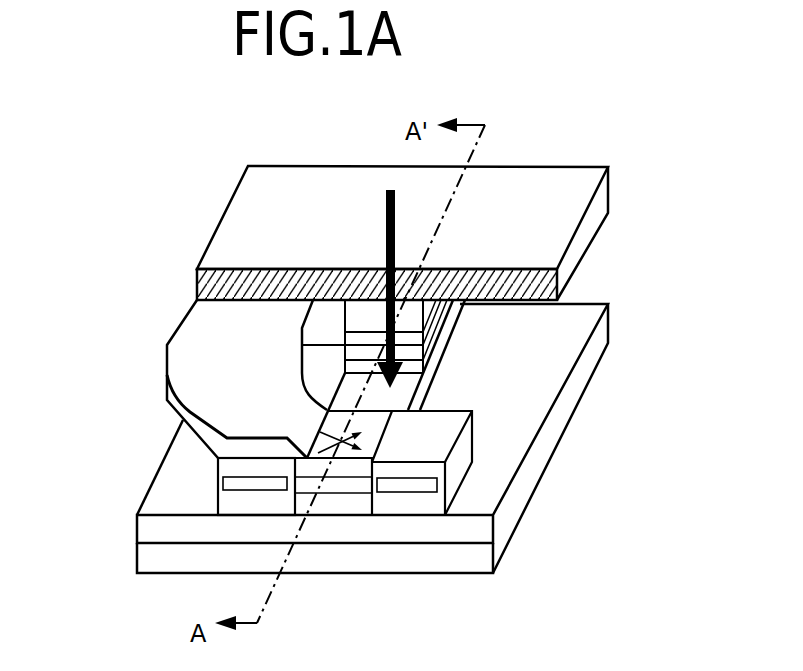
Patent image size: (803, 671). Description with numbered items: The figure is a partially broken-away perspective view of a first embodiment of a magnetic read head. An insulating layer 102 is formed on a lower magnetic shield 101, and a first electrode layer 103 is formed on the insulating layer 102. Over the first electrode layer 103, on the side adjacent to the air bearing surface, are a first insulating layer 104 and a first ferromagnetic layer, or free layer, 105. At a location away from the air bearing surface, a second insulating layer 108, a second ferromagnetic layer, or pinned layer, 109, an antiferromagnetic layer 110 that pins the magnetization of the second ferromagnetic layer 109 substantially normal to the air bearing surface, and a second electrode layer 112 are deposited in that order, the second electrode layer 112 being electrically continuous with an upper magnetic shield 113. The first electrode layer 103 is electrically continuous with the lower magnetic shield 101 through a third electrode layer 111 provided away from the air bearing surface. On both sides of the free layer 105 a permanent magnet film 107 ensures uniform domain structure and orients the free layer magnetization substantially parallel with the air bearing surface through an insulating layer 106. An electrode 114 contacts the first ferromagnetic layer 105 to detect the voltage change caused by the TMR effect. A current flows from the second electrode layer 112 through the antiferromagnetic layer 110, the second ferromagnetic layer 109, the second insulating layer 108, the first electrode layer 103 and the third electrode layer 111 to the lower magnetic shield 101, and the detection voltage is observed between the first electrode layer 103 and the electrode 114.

The lower magnetic shield 101 is at (402, 558).
The insulating layer 102 is at (435, 535).
The first electrode layer 103 is at (338, 505).
The first insulating layer 104 is at (312, 474).
The first ferromagnetic layer (free layer) 105 is at (337, 428).
The insulating layer 106 is at (458, 465).
The permanent magnet film 107 is at (240, 480).
The second insulating layer 108 is at (408, 367).
The second ferromagnetic layer (pinned layer) 109 is at (408, 352).
The antiferromagnetic layer 110 is at (408, 338).
The third electrode layer 111 is at (468, 313).
The second electrode layer 112 is at (362, 315).
The upper magnetic shield 113 is at (248, 243).
The electrode 114 is at (215, 368).